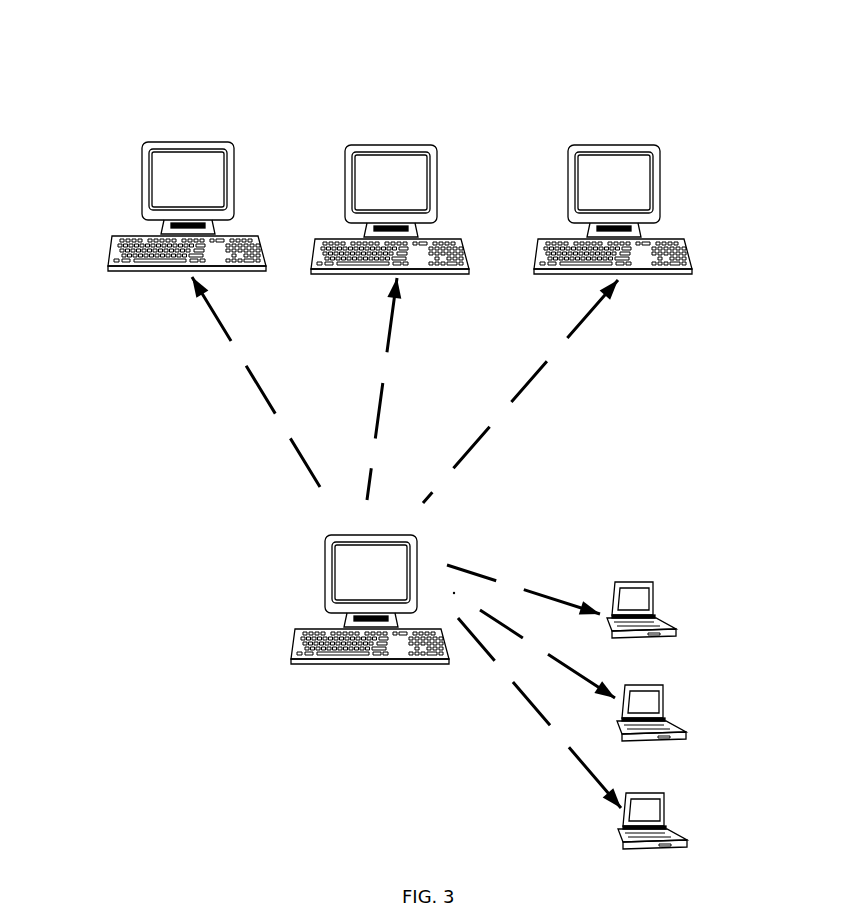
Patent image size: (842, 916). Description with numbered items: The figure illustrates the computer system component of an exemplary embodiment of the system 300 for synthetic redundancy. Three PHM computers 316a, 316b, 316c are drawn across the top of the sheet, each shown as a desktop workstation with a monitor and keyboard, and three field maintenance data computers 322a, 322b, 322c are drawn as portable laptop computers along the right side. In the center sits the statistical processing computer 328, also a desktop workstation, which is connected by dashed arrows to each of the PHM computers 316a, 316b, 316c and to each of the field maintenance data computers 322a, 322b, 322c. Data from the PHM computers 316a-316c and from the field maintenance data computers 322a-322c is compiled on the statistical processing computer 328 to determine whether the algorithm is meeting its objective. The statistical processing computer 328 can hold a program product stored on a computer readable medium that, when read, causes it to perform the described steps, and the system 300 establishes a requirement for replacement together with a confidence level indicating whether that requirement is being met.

The system for synthetic redundancy 300 is at (96, 73).
The PHM computer 316a is at (184, 226).
The PHM computer 316b is at (389, 228).
The PHM computer 316c is at (613, 227).
The statistical processing computer 328 is at (370, 623).
The field maintenance data computer 322a is at (668, 610).
The field maintenance data computer 322b is at (679, 713).
The field maintenance data computer 322c is at (680, 821).